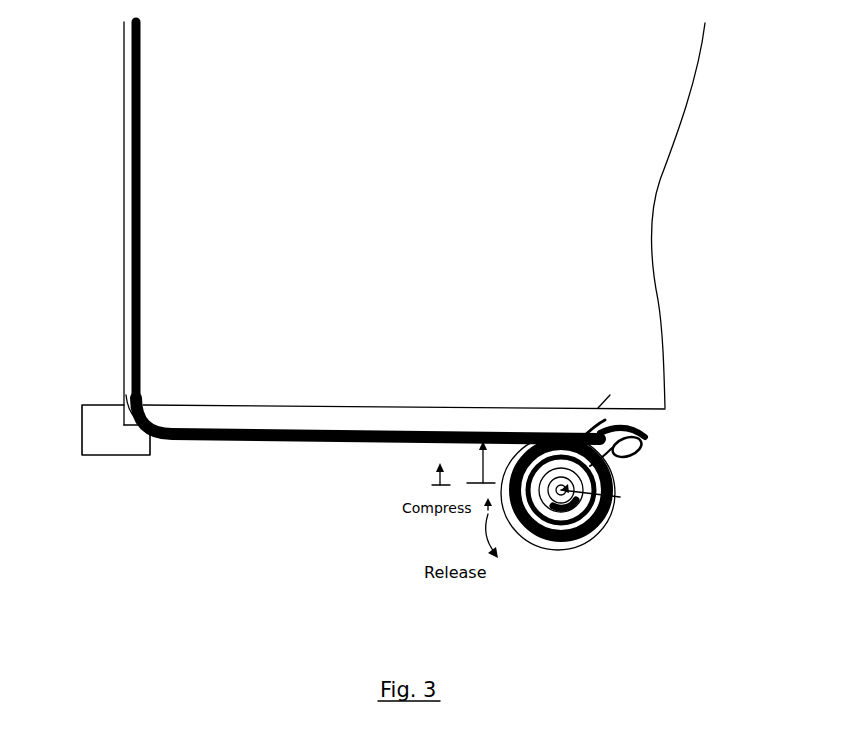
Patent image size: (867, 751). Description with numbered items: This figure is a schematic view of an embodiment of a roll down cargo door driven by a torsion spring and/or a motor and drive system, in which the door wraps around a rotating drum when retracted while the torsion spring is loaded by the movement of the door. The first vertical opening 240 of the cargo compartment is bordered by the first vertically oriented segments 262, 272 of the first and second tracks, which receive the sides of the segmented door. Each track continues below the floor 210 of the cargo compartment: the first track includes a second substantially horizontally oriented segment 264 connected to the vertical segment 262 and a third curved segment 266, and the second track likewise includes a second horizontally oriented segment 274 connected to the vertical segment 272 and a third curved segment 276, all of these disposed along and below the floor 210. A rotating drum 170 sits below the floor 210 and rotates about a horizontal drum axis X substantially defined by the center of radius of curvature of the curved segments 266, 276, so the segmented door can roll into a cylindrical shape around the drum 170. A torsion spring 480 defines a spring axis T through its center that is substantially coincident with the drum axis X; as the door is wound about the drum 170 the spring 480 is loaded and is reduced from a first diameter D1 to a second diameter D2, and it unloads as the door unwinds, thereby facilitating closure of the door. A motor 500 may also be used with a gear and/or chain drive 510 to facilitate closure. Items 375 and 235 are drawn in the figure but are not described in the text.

The first vertical opening 240 is at (104, 36).
The first vertically oriented segment 262 is at (183, 223).
The first vertically oriented segment 272 is at (142, 90).
The second substantially horizontally oriented segment 264 is at (400, 401).
The second substantially horizontally oriented segment 274 is at (368, 428).
The corner portion 375 is at (150, 397).
The support block 235 is at (103, 457).
The torsion spring 480 is at (543, 545).
The rotating drum 170 is at (561, 488).
The gear and/or chain drive 510 is at (599, 440).
The floor 210 is at (600, 408).
The motor 500 is at (656, 426).
The third curved segment 266 is at (677, 443).
The third curved segment 276 is at (642, 447).
The spring axis T is at (647, 475).
The drum axis X is at (620, 497).
The first diameter D1 is at (426, 474).
The second diameter D2 is at (478, 462).